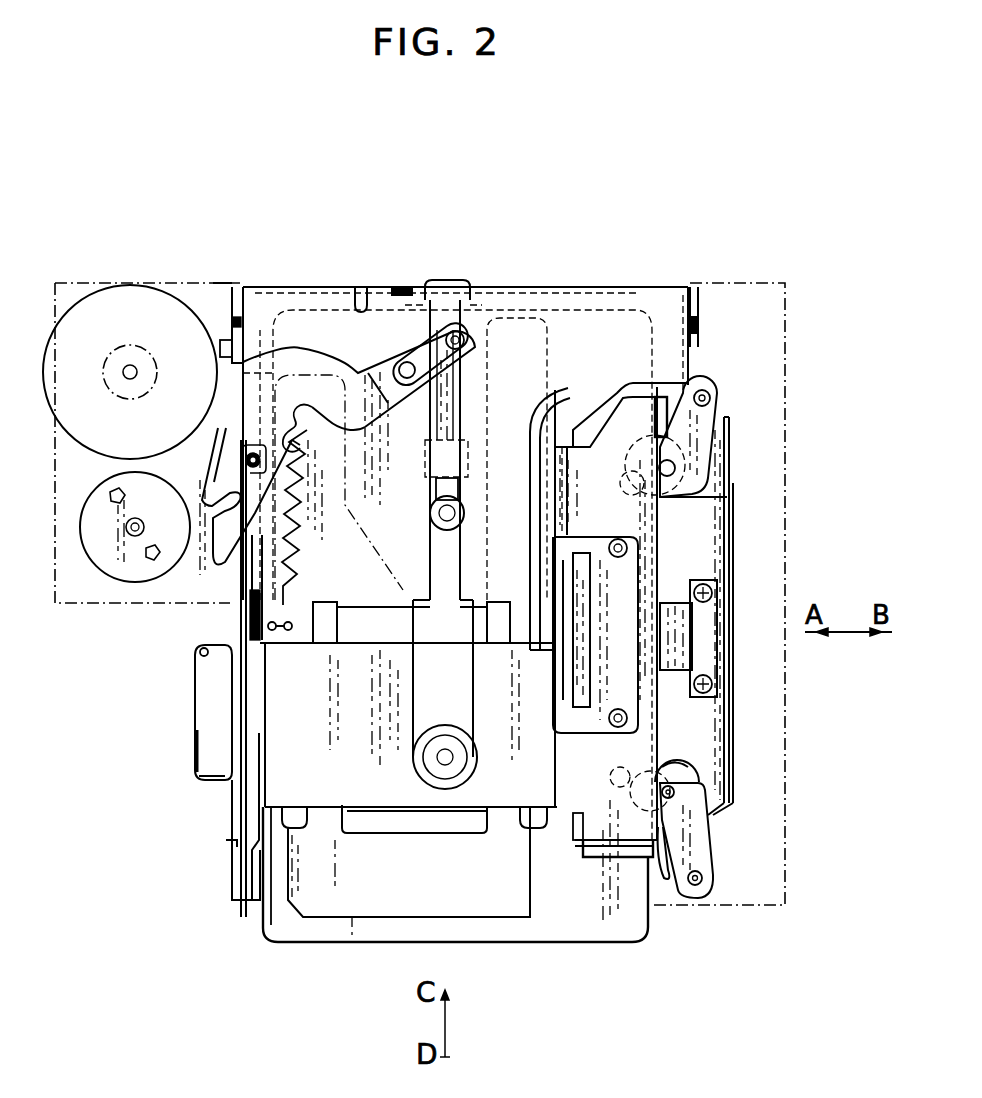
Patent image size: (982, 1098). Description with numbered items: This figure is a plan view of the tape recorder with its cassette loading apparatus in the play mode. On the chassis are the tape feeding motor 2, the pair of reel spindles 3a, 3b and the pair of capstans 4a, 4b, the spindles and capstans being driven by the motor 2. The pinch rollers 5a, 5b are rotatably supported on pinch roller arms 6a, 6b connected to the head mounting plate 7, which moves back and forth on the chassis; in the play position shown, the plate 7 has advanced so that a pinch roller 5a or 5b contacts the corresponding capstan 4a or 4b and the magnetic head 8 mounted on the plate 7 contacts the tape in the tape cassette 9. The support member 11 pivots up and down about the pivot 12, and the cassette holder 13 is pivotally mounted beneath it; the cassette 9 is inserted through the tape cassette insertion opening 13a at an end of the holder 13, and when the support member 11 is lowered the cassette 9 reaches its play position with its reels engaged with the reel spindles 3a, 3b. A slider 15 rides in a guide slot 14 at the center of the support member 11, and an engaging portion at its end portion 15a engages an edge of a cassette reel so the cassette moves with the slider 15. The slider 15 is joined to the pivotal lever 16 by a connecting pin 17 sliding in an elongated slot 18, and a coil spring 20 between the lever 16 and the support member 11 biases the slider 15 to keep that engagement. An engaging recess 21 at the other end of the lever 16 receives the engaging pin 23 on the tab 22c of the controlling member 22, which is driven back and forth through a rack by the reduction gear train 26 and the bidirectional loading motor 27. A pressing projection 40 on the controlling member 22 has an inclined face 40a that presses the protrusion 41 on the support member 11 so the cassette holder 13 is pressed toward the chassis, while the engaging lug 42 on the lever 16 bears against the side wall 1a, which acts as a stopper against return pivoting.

The tape feeding motor 2 is at (158, 285).
The side wall 1a is at (216, 378).
The pivot 12 is at (232, 320).
The support member 11 is at (330, 287).
The engaging lug 42 is at (222, 348).
The pivotal lever 16 is at (305, 358).
The elongated slot 18 is at (400, 364).
The connecting pin 17 is at (465, 341).
The guide slot 14 is at (462, 391).
The slider 15 is at (437, 458).
The end portion of the slider 15a is at (433, 510).
The reel spindle 3a is at (463, 513).
The reel spindle 3b is at (478, 756).
The reduction gear train 26 is at (103, 476).
The bidirectional loading motor 27 is at (105, 586).
The engaging recess 21 is at (202, 498).
The coil spring 20 is at (290, 573).
The pressing projection 40 is at (243, 557).
The inclined face 40a is at (236, 583).
The protrusion 41 is at (230, 606).
The controlling member 22 is at (195, 712).
The engaging pin 23 is at (202, 655).
The tab 22c is at (196, 760).
The cassette holder 13 is at (328, 812).
The tape cassette insertion opening 13a is at (500, 812).
The tape cassette 9 is at (648, 937).
The capstan 4a is at (630, 476).
The capstan 4b is at (622, 787).
The pinch roller arm 6a is at (722, 385).
The pinch roller arm 6b is at (712, 895).
The pinch roller 5a is at (733, 489).
The pinch roller 5b is at (668, 765).
The magnetic head 8 is at (672, 603).
The head mounting plate 7 is at (735, 768).